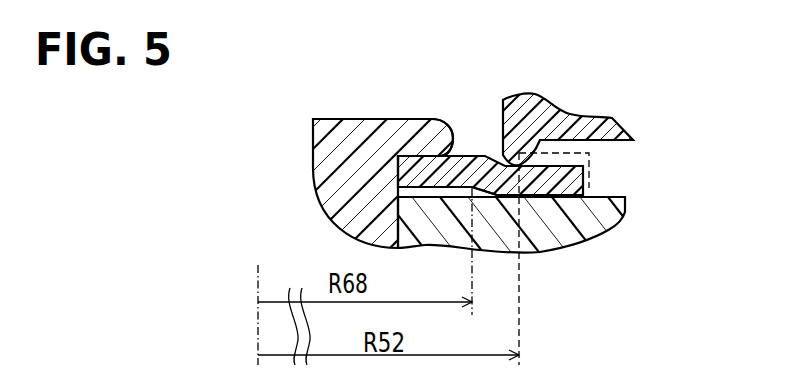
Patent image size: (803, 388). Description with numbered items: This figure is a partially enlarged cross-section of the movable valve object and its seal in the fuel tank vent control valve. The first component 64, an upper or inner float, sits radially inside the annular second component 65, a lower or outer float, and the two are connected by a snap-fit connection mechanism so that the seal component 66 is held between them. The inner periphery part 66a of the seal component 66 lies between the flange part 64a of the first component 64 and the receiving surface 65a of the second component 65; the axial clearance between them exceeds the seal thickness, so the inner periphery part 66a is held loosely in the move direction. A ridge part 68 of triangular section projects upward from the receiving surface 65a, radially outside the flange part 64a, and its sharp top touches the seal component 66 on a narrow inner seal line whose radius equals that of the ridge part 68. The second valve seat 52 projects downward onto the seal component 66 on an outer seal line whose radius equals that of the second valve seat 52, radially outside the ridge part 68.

The second valve seat 52 is at (503, 130).
The first component 64 is at (336, 153).
The flange part 64a is at (451, 135).
The second component 65 is at (607, 227).
The receiving surface 65a is at (607, 196).
The seal component 66 is at (589, 161).
The inner periphery part 66a is at (416, 152).
The ridge part 68 is at (474, 190).